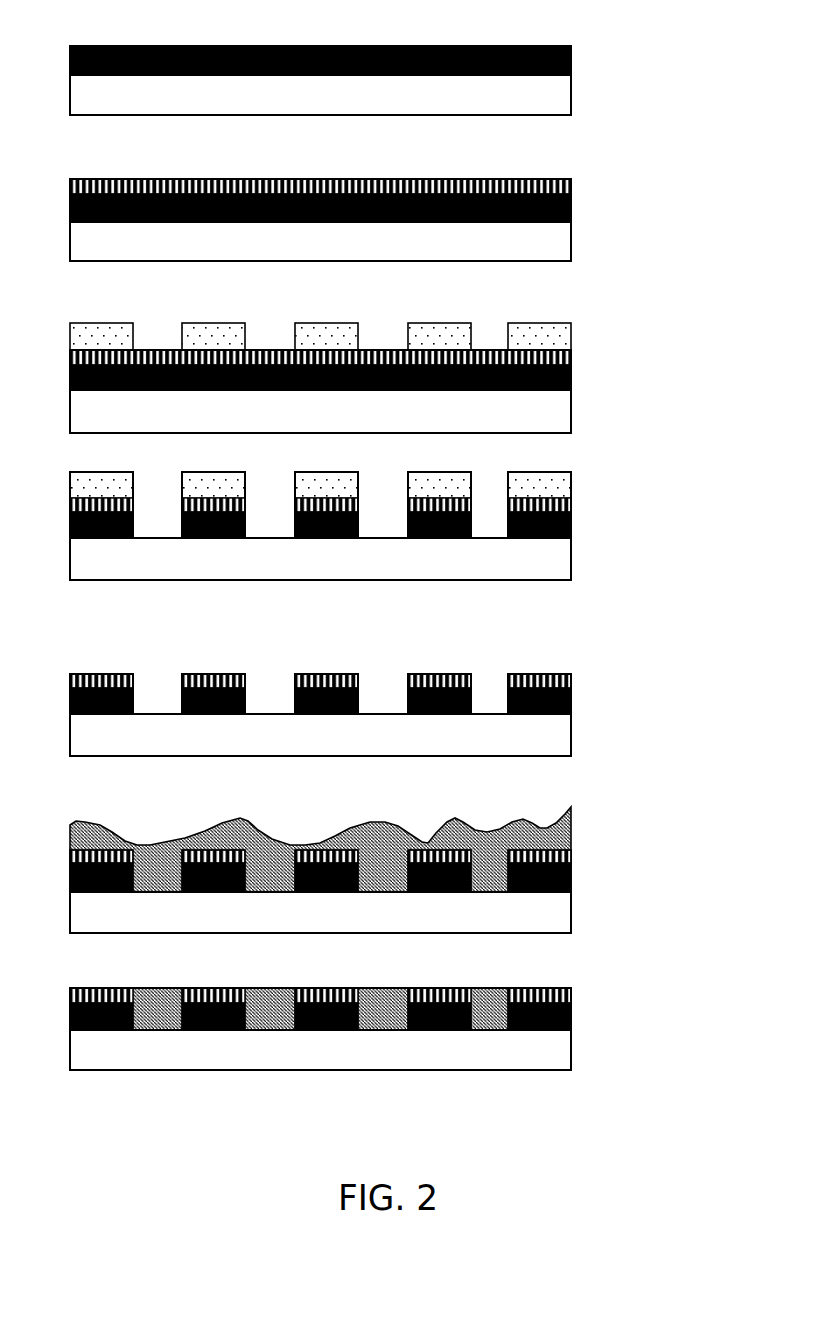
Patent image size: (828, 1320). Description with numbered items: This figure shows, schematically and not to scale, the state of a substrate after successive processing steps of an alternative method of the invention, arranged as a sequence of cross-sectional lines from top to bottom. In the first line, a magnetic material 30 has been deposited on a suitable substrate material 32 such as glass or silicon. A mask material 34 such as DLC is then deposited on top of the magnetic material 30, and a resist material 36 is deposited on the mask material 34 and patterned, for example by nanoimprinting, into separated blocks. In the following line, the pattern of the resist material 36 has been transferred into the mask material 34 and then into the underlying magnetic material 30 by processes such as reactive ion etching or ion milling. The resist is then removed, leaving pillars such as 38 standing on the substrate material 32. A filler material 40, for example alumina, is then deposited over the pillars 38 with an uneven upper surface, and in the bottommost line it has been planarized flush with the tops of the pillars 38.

The magnetic material 30 is at (583, 57).
The substrate material 32 is at (583, 97).
The mask material 34 is at (583, 183).
The resist material 36 is at (583, 334).
The pillars 38 is at (313, 659).
The filler material 40 is at (583, 833).